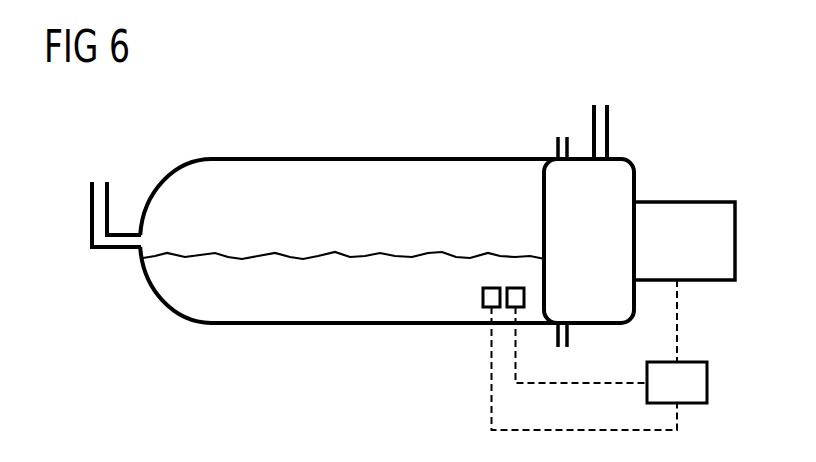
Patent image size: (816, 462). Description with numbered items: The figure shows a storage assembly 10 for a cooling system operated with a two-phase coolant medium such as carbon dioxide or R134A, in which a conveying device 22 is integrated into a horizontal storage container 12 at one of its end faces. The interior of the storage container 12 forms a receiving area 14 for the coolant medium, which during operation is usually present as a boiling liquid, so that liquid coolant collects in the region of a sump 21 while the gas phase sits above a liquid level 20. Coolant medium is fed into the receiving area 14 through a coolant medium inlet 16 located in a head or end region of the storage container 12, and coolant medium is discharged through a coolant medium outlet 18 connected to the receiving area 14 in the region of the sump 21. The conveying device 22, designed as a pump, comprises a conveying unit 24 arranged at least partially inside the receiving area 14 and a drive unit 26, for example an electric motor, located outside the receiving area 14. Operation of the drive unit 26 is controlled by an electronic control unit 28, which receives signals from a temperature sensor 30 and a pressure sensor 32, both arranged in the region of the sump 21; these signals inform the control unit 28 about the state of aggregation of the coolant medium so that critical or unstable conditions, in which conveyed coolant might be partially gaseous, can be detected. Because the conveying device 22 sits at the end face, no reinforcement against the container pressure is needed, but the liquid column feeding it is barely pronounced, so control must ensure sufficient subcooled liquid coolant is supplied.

The storage assembly 10 is at (482, 108).
The storage container 12 is at (290, 158).
The receiving area 14 is at (222, 168).
The coolant medium inlet 16 is at (100, 199).
The coolant medium outlet 18 is at (600, 119).
The liquid level 20 is at (245, 257).
The sump 21 is at (258, 318).
The conveying device 22 is at (684, 160).
The conveying unit 24 is at (583, 168).
The drive unit 26 is at (723, 237).
The electronic control unit 28 is at (708, 383).
The temperature sensor 30 is at (483, 297).
The pressure sensor 32 is at (515, 288).